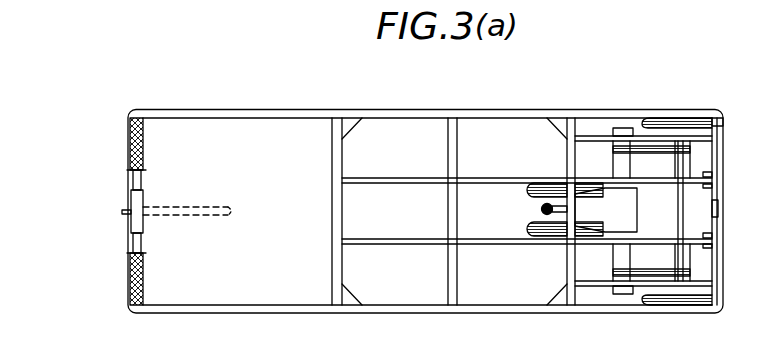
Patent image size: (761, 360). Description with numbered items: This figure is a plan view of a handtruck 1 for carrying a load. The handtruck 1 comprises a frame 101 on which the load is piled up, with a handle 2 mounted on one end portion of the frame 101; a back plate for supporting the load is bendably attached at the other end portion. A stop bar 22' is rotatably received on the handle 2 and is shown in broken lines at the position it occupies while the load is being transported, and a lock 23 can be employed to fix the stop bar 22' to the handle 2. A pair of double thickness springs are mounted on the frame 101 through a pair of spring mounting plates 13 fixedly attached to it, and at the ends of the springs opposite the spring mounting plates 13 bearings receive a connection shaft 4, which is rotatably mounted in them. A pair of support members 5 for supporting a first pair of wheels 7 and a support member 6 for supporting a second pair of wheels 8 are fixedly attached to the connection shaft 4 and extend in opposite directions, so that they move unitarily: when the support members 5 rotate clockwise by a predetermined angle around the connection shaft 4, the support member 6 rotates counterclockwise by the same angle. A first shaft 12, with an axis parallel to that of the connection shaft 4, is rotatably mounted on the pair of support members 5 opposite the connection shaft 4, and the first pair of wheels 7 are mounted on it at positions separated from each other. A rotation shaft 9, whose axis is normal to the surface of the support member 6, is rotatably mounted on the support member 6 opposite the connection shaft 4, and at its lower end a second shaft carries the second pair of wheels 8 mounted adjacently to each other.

The handtruck 1 is at (262, 106).
The frame 101 is at (376, 110).
The handle 2 is at (131, 271).
The lock 23 is at (122, 212).
The stop bar 22' is at (187, 233).
The connection shaft 4 is at (478, 110).
The spring mounting plate 13 is at (583, 134).
The first pair of wheels 7 is at (660, 118).
The support member 6 is at (600, 198).
The second pair of wheels 8 is at (557, 196).
The rotation shaft 9 is at (541, 209).
The support members 5 is at (659, 156).
The first shaft 12 is at (688, 222).